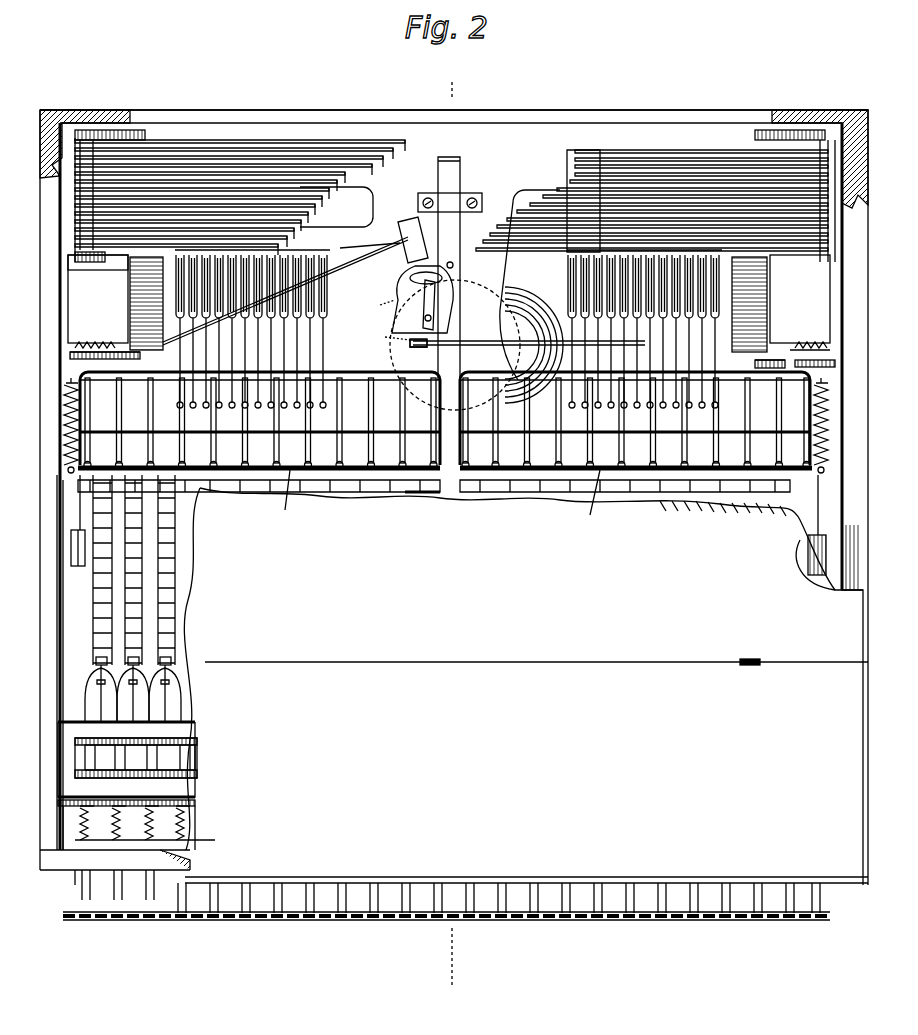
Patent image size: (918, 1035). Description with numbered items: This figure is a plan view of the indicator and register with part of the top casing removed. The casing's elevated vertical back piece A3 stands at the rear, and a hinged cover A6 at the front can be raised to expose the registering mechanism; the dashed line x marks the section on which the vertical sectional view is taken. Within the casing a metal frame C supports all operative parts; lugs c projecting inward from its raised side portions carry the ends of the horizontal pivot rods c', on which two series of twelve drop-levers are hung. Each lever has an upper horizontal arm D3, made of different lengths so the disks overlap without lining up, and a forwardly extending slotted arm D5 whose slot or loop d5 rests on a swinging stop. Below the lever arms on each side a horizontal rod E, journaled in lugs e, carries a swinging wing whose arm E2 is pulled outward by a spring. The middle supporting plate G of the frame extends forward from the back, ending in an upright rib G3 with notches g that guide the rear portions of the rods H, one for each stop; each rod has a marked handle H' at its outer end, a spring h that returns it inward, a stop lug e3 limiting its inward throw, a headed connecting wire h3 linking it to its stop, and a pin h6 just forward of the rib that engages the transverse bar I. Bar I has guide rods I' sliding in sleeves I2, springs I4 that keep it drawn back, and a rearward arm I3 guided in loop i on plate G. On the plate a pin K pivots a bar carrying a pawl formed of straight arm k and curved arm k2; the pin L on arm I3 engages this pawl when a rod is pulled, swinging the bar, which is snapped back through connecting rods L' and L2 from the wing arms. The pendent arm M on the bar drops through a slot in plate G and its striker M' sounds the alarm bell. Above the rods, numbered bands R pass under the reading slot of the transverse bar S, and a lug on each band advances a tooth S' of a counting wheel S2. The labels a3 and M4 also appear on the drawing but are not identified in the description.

The metal frame C is at (848, 520).
The elevated vertical back piece A3 is at (515, 118).
The section line x is at (447, 535).
The upper horizontal arm D3 is at (245, 152).
The slotted arm D5 is at (330, 280).
The slot d5 is at (740, 330).
The horizontal bar E is at (780, 308).
The arm E2 is at (452, 336).
The lugs c is at (463, 226).
The horizontal pivot bars c' is at (106, 575).
The lugs e is at (140, 356).
The stop pin e3 is at (78, 876).
The arm I3 is at (445, 412).
The loop i is at (455, 198).
The middle supporting-plate G is at (455, 289).
The pin K is at (422, 275).
The straight arm k is at (412, 318).
The curved arm k2 is at (416, 300).
The pin L is at (463, 265).
The connecting-rod L' is at (366, 241).
The connecting-rod L2 is at (480, 343).
The pendent arm M is at (407, 351).
The striker M' is at (386, 333).
The quadrant sector M4 is at (540, 298).
The rods H is at (437, 657).
The notches g is at (115, 460).
The pin h6 is at (445, 480).
The headed wire h3 is at (448, 357).
The springs I4 is at (66, 410).
The upright rib G3 is at (437, 501).
The bar I is at (422, 483).
The body panel a3 is at (526, 669).
The cover A6 is at (526, 828).
The guide-rods I' is at (431, 514).
The guide-sleeves I2 is at (808, 565).
The band R is at (93, 600).
The tooth S' is at (133, 651).
The wheel S2 is at (180, 690).
The transverse bar S is at (139, 760).
The spring h is at (78, 822).
The handles H' is at (446, 897).